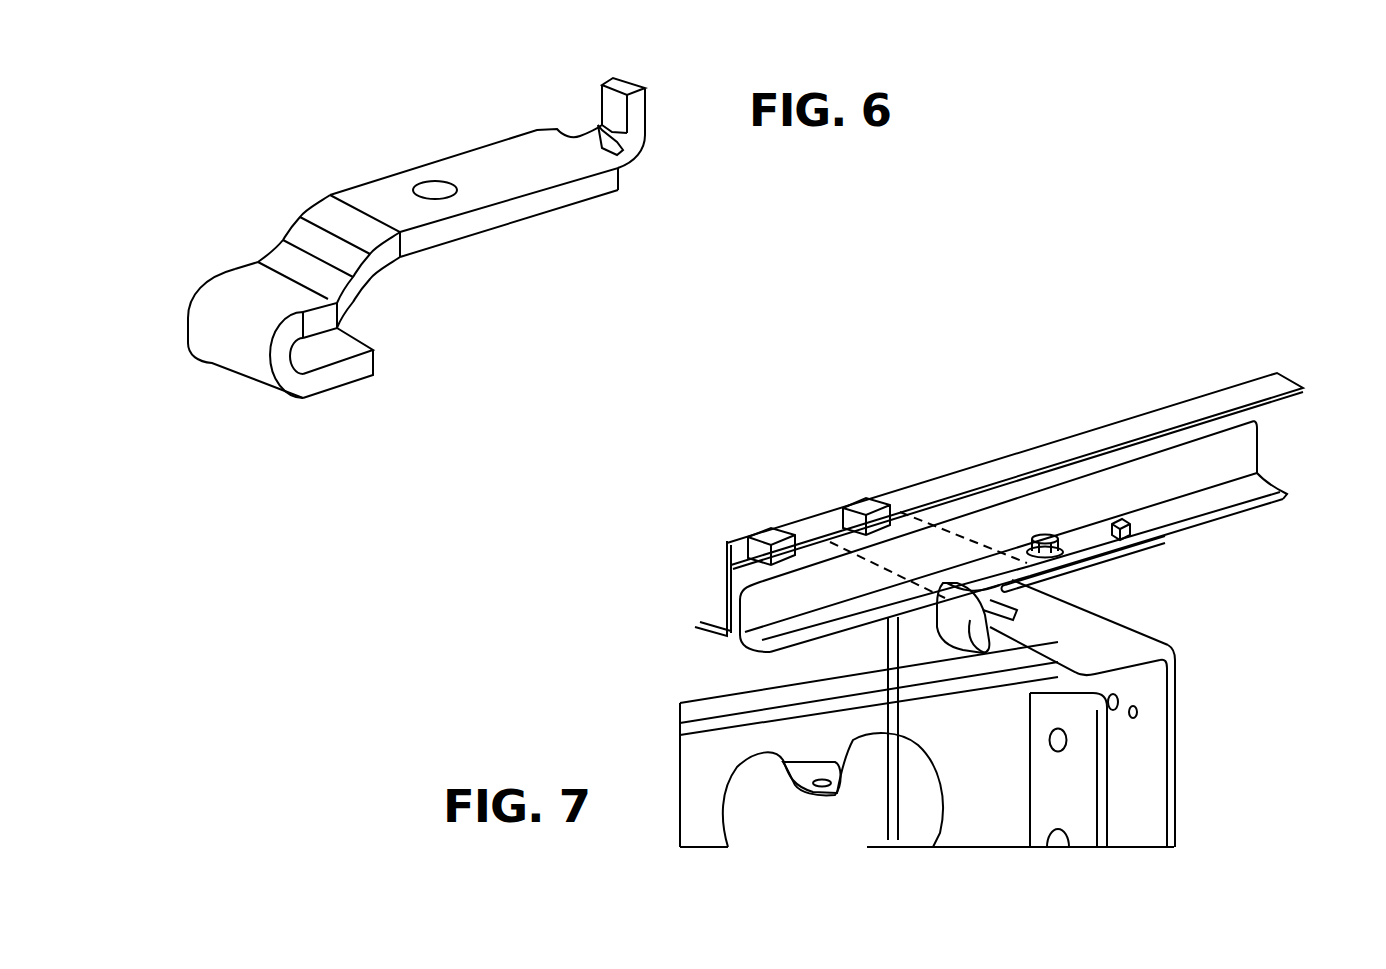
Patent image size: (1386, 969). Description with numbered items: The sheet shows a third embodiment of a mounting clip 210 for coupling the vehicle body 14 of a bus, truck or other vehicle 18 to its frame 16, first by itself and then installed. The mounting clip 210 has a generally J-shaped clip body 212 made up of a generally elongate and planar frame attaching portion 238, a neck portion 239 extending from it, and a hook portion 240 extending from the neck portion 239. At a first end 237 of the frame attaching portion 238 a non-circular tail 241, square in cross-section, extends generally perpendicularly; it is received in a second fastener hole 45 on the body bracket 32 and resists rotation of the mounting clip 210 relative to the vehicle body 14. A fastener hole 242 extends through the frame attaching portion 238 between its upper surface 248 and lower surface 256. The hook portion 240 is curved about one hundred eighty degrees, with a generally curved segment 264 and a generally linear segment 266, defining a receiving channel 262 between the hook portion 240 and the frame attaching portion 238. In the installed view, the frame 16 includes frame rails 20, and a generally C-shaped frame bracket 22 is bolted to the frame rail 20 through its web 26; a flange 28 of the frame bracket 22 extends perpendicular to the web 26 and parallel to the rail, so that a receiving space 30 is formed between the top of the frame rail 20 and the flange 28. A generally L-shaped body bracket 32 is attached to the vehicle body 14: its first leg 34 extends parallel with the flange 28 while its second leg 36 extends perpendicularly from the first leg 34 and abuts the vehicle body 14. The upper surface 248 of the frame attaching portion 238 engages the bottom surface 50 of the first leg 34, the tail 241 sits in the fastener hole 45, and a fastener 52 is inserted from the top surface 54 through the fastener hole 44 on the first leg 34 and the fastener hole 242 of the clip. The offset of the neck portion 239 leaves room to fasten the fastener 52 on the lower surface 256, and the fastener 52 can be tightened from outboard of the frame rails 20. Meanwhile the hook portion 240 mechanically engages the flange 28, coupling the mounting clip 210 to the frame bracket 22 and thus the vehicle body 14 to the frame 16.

In FIG. 6, the clip body 212 is at (373, 177).
In FIG. 6, the neck portion 239 is at (322, 225).
In FIG. 7, the neck portion 239 is at (1000, 583).
In FIG. 6, the hook portion 240 is at (250, 305).
In FIG. 7, the hook portion 240 is at (885, 525).
In FIG. 6, the curved segment 264 is at (273, 368).
In FIG. 6, the receiving channel 262 is at (343, 347).
In FIG. 6, the linear segment 266 is at (352, 377).
In FIG. 6, the fastener hole 242 is at (437, 183).
In FIG. 6, the frame attaching portion 238 is at (502, 140).
In FIG. 7, the frame attaching portion 238 is at (1100, 572).
In FIG. 6, the first end 237 is at (575, 127).
In FIG. 6, the tail 241 is at (640, 112).
In FIG. 7, the tail 241 is at (1120, 521).
In FIG. 6, the upper surface 248 is at (512, 186).
In FIG. 6, the lower surface 256 is at (488, 230).
In FIG. 6, the mounting clip 210 is at (688, 247).
In FIG. 7, the vehicle body 14 is at (920, 500).
In FIG. 7, the second leg 36 is at (730, 595).
In FIG. 7, the body bracket 32 is at (1130, 483).
In FIG. 7, the top surface 54 is at (1262, 468).
In FIG. 7, the bottom surface 50 is at (1247, 514).
In FIG. 7, the first leg 34 is at (777, 623).
In FIG. 7, the second fastener hole 45 is at (1127, 547).
In FIG. 7, the fastener hole 44 is at (1055, 535).
In FIG. 7, the fastener 52 is at (1041, 535).
In FIG. 7, the frame rail 20 is at (700, 700).
In FIG. 7, the frame 16 is at (712, 847).
In FIG. 7, the receiving space 30 is at (1010, 637).
In FIG. 7, the flange 28 is at (1090, 648).
In FIG. 7, the frame bracket 22 is at (1177, 778).
In FIG. 7, the web 26 is at (1137, 743).
In FIG. 7, the vehicle 18 is at (590, 725).